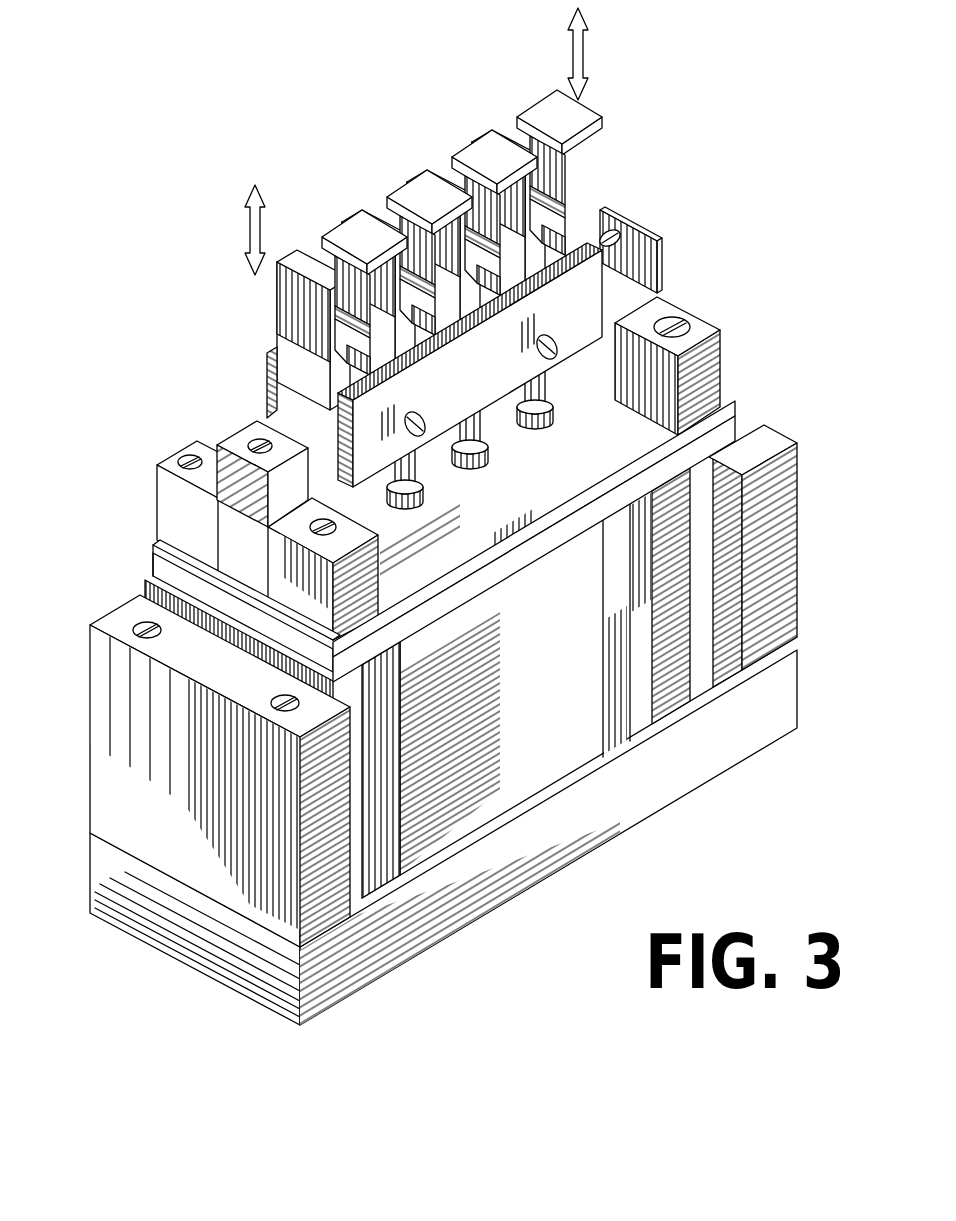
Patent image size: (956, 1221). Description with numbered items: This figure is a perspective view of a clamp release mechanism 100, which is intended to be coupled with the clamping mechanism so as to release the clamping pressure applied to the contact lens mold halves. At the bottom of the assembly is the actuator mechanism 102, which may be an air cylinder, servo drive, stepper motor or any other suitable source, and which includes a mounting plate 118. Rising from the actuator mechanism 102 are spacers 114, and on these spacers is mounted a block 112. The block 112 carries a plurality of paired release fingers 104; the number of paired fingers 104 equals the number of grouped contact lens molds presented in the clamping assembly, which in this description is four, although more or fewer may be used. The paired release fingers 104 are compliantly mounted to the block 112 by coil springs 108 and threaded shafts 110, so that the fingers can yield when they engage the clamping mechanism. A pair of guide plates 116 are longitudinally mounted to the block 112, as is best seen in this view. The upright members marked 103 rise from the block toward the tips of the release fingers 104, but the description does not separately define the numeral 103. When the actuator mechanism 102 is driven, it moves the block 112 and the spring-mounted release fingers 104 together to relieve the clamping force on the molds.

The clamp release mechanism 100 is at (750, 196).
The actuator mechanism 102 is at (572, 678).
The contact fingers 103 is at (490, 297).
The paired release fingers 104 is at (462, 150).
The coil springs 108 is at (558, 392).
The threaded shafts 110 is at (572, 372).
The block 112 is at (645, 267).
The spacers 114 is at (705, 370).
The guide plates 116 is at (266, 368).
The mounting plate 118 is at (728, 423).